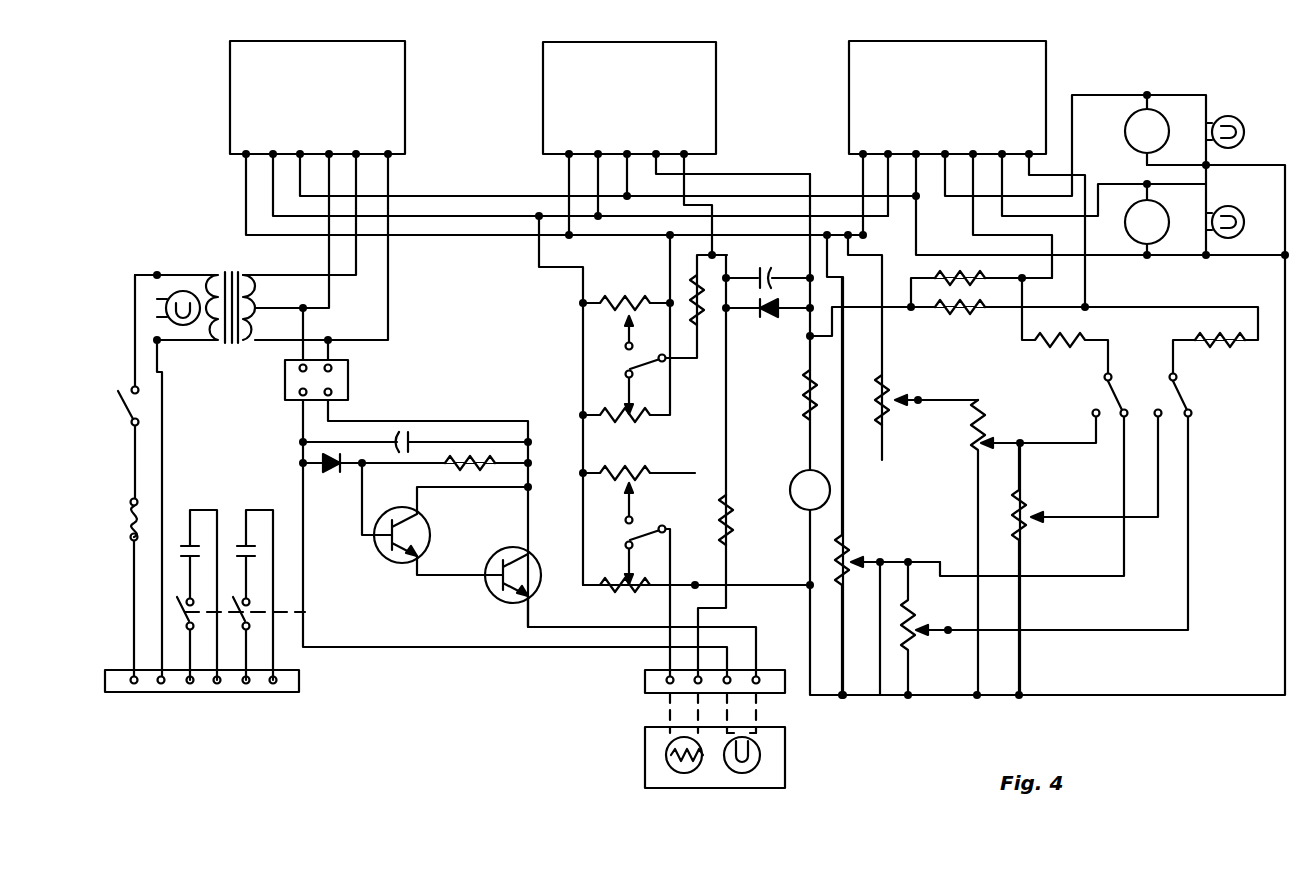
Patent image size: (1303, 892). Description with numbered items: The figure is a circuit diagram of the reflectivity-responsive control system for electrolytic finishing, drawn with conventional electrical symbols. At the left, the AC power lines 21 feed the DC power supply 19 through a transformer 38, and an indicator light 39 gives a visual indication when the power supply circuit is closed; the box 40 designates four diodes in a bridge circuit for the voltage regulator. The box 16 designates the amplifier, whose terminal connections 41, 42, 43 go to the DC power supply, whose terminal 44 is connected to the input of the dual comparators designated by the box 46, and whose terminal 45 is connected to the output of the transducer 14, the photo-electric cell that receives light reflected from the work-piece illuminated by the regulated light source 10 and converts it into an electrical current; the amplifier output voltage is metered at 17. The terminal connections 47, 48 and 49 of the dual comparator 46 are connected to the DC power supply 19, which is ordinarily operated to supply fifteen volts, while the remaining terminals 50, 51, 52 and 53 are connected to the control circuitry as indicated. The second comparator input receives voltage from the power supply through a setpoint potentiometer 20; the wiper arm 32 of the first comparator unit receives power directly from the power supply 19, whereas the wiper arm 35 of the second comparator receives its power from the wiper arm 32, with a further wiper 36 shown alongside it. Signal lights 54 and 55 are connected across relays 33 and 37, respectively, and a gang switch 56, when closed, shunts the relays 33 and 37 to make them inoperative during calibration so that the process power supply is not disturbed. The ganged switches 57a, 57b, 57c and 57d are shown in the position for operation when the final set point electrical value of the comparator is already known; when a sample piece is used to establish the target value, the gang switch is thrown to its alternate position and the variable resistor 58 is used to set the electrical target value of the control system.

The regulated light source 10 is at (665, 757).
The transducer 14 is at (762, 757).
The amplifier 16 is at (545, 58).
The meter 17 is at (797, 481).
The DC power supply 19 is at (232, 66).
The setpoint potentiometer 20 is at (978, 440).
The AC power lines 21 is at (160, 573).
The wiper arm 32 is at (1008, 440).
The relay 33 is at (243, 542).
The wiper arm 35 is at (1060, 518).
The potentiometer wiper 36 is at (1022, 538).
The relay 37 is at (185, 542).
The transformer 38 is at (222, 272).
The indicator light 39 is at (183, 325).
The diode bridge box 40 is at (348, 381).
The terminal connection 41 is at (568, 148).
The terminal connection 42 is at (598, 152).
The terminal connection 43 is at (626, 148).
The terminal 44 is at (656, 152).
The terminal 45 is at (685, 152).
The dual comparator box 46 is at (850, 56).
The terminal connection 47 is at (866, 146).
The terminal connection 48 is at (890, 152).
The terminal connection 49 is at (920, 148).
The terminal 50 is at (949, 152).
The terminal 51 is at (977, 148).
The terminal 52 is at (1004, 152).
The terminal 53 is at (1031, 147).
The signal light 54 is at (1238, 118).
The signal light 55 is at (1238, 210).
The gang switch 56 is at (300, 614).
The ganged switch 57a is at (1105, 396).
The ganged switch 57b is at (1185, 402).
The ganged switch 57c is at (645, 367).
The ganged switch 57d is at (696, 573).
The variable resistor 58 is at (645, 420).